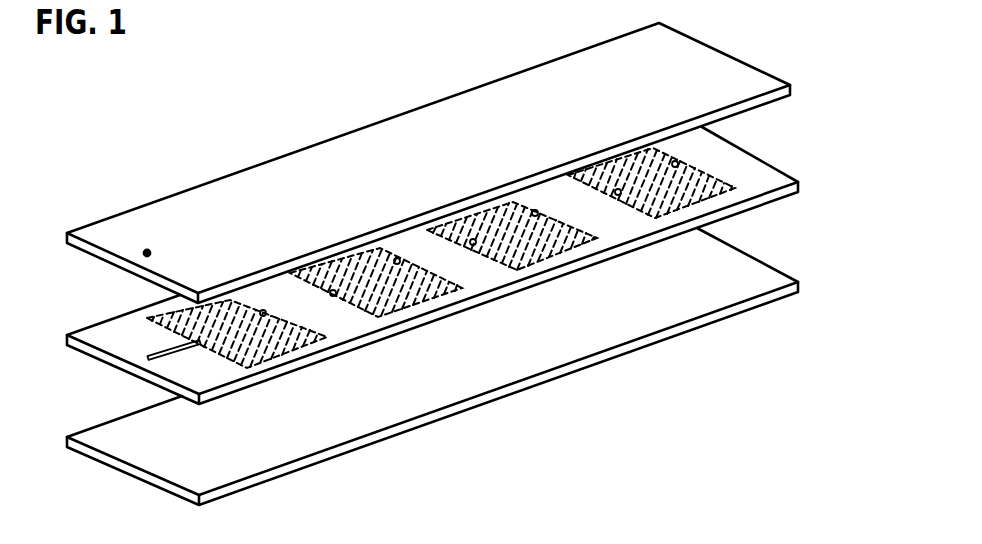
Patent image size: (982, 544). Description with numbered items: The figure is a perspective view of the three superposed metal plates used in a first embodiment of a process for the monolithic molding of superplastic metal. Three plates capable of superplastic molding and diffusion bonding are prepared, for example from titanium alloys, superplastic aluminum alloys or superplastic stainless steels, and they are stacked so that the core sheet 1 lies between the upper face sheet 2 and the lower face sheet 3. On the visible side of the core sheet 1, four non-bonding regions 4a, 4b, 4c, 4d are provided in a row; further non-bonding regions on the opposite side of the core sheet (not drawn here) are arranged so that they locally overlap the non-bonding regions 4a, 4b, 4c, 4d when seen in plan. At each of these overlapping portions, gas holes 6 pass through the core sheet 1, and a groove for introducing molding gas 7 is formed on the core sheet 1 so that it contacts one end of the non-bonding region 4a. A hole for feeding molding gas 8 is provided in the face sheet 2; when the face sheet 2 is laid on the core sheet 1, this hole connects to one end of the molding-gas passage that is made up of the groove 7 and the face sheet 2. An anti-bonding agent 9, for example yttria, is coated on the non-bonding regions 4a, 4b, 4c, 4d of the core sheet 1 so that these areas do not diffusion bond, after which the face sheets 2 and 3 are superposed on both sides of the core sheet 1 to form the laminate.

The core sheet 1 is at (776, 182).
The face sheet 2 is at (732, 67).
The face sheet 3 is at (760, 280).
The non-bonding region 4a is at (170, 328).
The non-bonding region 4b is at (430, 290).
The non-bonding region 4c is at (586, 246).
The non-bonding region 4d is at (716, 179).
The gas holes 6 is at (330, 293).
The groove for introducing molding gas 7 is at (150, 360).
The hole for feeding molding gas 8 is at (147, 252).
The anti-bonding agent 9 is at (133, 310).